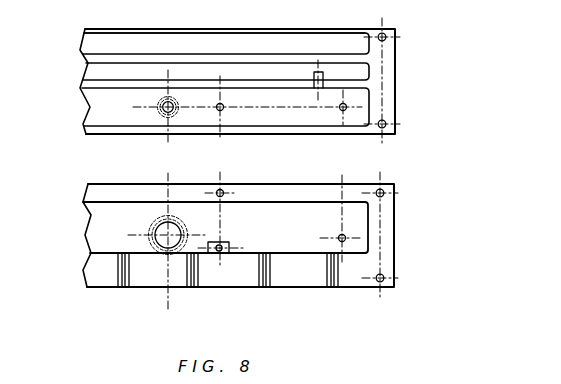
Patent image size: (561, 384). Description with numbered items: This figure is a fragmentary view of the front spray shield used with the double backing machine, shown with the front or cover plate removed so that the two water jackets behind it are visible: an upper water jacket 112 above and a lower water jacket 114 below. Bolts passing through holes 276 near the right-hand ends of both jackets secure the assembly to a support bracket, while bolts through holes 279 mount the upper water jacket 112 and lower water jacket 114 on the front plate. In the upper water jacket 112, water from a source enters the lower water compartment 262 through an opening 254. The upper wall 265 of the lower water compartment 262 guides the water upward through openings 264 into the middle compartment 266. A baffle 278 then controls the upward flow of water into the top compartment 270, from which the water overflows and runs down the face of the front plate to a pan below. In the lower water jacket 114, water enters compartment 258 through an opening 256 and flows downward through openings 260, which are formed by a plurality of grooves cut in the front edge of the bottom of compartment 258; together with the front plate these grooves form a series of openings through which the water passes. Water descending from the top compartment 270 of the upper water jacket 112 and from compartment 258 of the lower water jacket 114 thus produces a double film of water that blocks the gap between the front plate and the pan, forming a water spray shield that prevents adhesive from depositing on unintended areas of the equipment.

The upper water jacket 112 is at (395, 65).
The lower water jacket 114 is at (394, 235).
The opening 254 is at (165, 110).
The opening 256 is at (153, 231).
The compartment 258 is at (88, 238).
The openings 260 is at (123, 288).
The lower water compartment 262 is at (86, 104).
The openings 264 is at (316, 86).
The upper wall 265 is at (262, 85).
The middle compartment 266 is at (208, 62).
The top compartment 270 is at (249, 34).
The holes 276 is at (384, 34).
The baffle 278 is at (295, 60).
The holes 279 is at (221, 110).